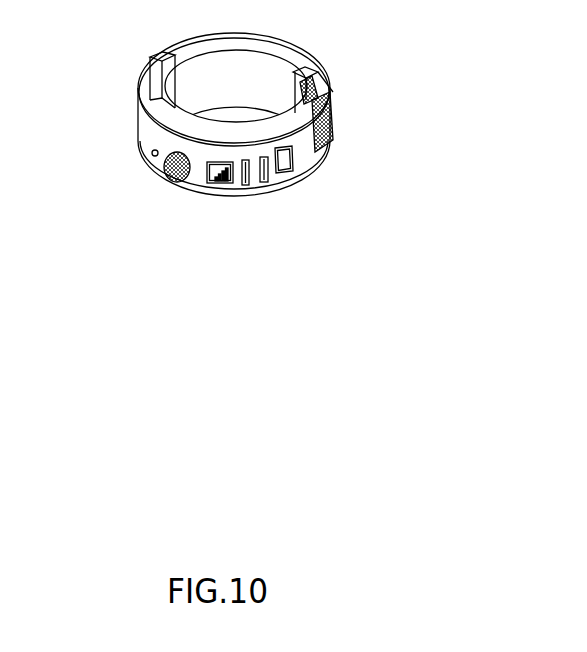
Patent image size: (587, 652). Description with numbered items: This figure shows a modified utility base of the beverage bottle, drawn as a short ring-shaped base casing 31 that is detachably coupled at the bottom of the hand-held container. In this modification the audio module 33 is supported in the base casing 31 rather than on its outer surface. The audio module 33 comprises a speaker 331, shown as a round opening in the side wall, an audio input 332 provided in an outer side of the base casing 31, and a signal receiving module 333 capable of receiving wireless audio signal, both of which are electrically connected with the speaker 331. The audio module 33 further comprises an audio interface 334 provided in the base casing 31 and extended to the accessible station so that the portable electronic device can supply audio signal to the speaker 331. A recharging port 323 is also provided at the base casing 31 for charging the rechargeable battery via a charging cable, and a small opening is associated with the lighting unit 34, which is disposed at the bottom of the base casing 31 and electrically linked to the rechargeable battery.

The base casing 31 is at (147, 123).
The audio module 33 is at (341, 236).
The lighting unit 34 is at (152, 155).
The speaker 331 is at (170, 181).
The recharging port 323 is at (218, 184).
The audio input 332 is at (246, 186).
The audio interface 334 is at (268, 181).
The signal receiving module 333 is at (294, 164).